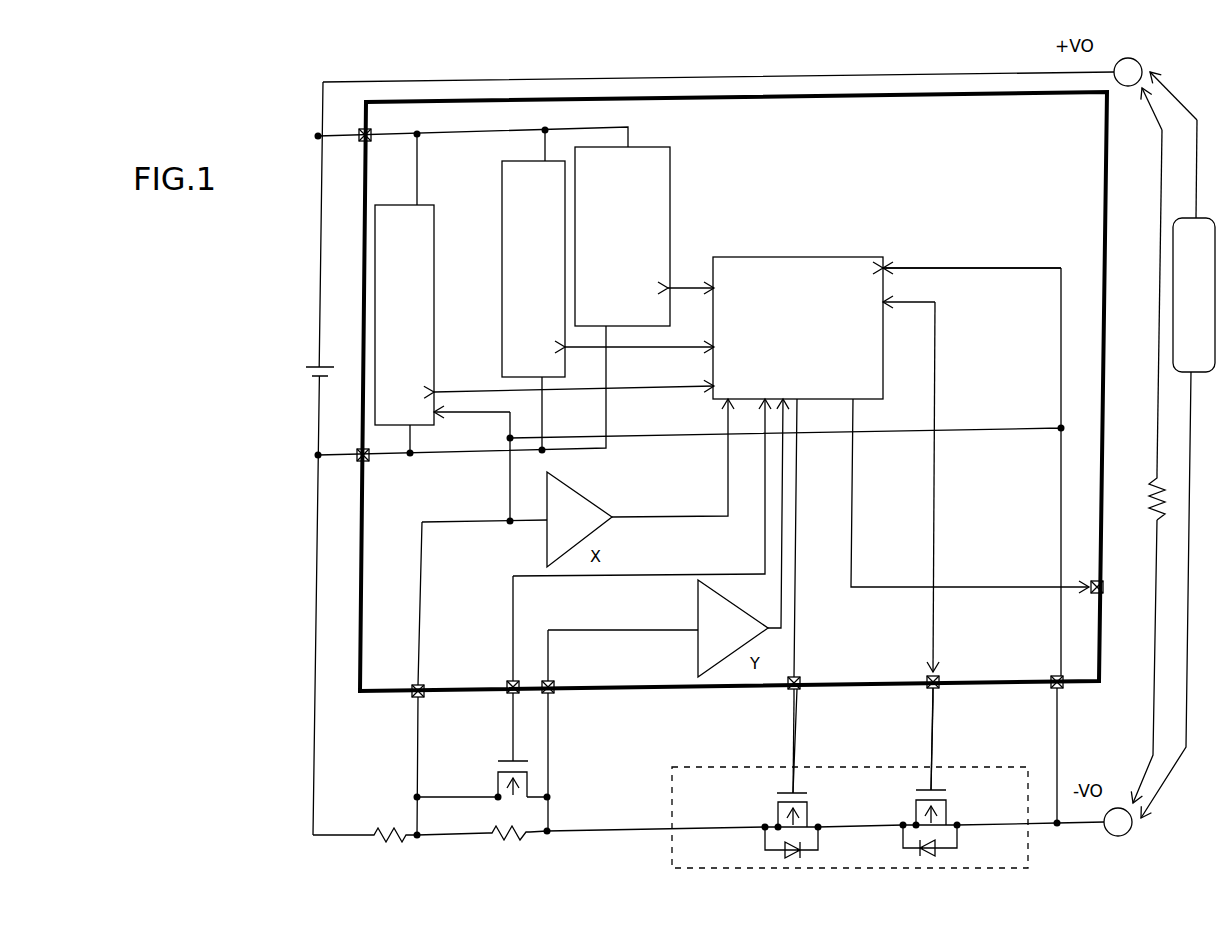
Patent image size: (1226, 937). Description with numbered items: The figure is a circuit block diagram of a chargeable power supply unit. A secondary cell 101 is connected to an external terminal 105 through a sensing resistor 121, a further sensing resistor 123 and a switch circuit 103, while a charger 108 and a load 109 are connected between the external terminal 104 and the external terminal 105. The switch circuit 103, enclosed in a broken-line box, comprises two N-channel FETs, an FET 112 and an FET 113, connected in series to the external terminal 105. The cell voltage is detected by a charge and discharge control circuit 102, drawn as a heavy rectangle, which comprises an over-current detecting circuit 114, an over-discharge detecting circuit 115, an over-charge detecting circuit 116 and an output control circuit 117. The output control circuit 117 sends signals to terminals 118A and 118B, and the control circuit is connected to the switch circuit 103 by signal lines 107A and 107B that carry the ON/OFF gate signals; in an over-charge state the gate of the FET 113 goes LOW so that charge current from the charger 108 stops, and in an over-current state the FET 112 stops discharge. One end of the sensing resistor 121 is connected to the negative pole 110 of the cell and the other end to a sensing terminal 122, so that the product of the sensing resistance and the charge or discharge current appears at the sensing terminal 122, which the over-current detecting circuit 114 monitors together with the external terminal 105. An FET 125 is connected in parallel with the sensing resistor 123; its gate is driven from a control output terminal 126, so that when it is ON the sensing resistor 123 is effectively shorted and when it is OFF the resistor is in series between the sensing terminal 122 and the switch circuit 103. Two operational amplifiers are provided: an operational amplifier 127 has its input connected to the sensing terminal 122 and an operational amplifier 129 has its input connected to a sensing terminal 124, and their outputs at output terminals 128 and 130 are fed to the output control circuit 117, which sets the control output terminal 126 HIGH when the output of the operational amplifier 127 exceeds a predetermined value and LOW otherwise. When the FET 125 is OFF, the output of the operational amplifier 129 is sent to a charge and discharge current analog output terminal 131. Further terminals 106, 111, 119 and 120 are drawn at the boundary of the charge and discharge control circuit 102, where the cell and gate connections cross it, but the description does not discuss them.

The secondary cell 101 is at (303, 374).
The charge and discharge control circuit 102 is at (358, 302).
The switch circuit 103 is at (1030, 843).
The external terminal 104 is at (1137, 52).
The external terminal 105 is at (1135, 830).
The terminal 106 is at (1060, 705).
The signal line 107A is at (790, 752).
The signal line 107B is at (930, 752).
The charger 108 is at (1168, 336).
The load 109 is at (1152, 470).
The negative pole of the secondary cell 110 is at (317, 136).
The negative power supply terminal 111 is at (303, 461).
The FET 112 is at (772, 805).
The FET 113 is at (950, 800).
The over-current detecting circuit 114 is at (428, 205).
The over-discharge detecting circuit 115 is at (553, 161).
The over-charge detecting circuit 116 is at (655, 147).
The output control circuit 117 is at (773, 257).
The terminal 118A is at (800, 695).
The terminal 118B is at (938, 695).
The terminal 119 is at (800, 672).
The terminal 120 is at (940, 672).
The sensing resistor 121 is at (390, 845).
The sensing terminal 122 is at (412, 705).
The sensing resistor 123 is at (497, 845).
The sensing terminal 124 is at (544, 668).
The FET 125 is at (530, 778).
The control output terminal 126 is at (517, 700).
The operational amplifier 127 is at (547, 541).
The output terminal of the operational amplifier 128 is at (686, 513).
The operational amplifier 129 is at (698, 605).
The output terminal of the operational amplifier 130 is at (732, 570).
The charge and discharge current analog output terminal 131 is at (1093, 578).